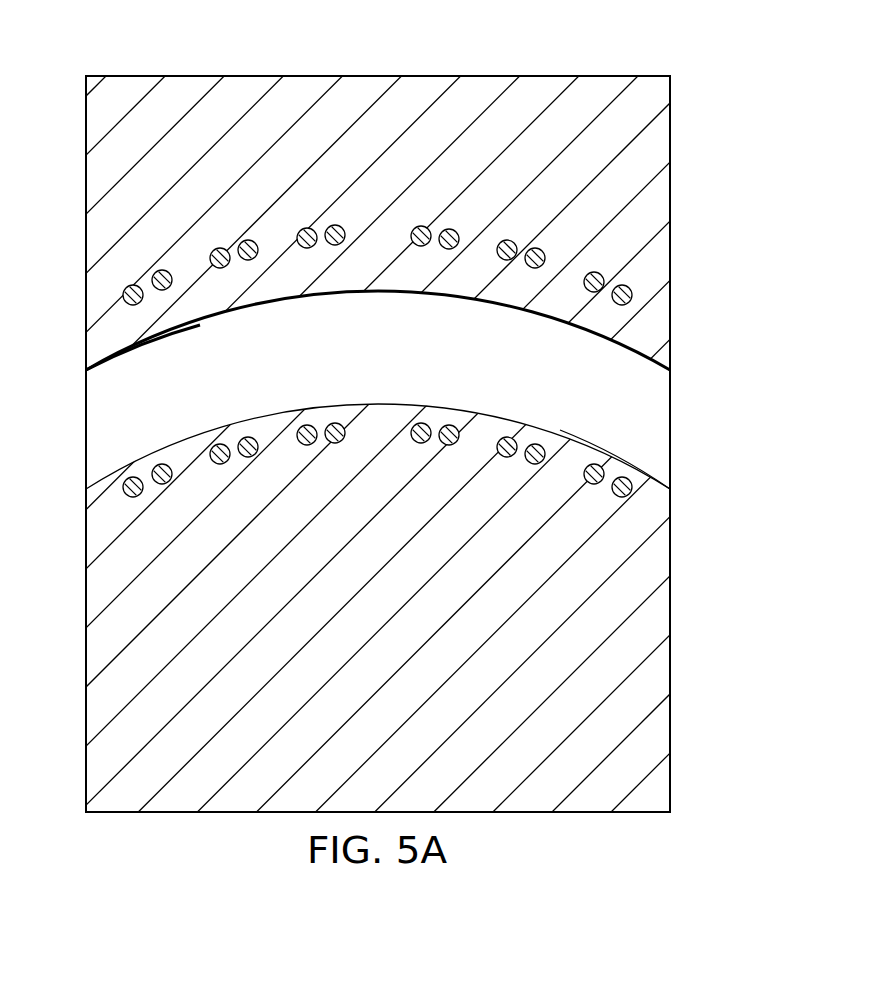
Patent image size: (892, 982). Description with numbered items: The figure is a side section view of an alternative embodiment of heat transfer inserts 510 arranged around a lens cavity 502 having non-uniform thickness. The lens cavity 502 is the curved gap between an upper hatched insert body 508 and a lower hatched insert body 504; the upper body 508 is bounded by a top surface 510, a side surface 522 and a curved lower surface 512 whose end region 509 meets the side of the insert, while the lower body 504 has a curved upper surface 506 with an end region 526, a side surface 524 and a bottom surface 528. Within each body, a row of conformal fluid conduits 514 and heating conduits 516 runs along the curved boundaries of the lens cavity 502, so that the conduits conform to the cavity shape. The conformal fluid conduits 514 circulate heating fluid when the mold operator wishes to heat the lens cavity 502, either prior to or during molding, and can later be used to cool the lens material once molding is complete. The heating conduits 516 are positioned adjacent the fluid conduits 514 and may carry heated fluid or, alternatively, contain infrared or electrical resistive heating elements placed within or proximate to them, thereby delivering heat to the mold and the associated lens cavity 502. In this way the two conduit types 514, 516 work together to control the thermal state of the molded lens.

The lens cavity 502 is at (94, 423).
The second body 504 is at (672, 611).
The upper surface of second body 506 is at (101, 487).
The first body 508 is at (93, 122).
The lower surface end of first body 509 is at (101, 366).
The heat transfer insert 510 is at (189, 76).
The curved lower surface of first body 512 is at (634, 359).
The conformal fluid conduit 514 is at (212, 252).
The heating conduit 516 is at (246, 240).
The side surface of first body 522 is at (672, 133).
The side surface of second body 524 is at (87, 712).
The curved surface end of second body 526 is at (628, 465).
The bottom surface 528 is at (640, 813).